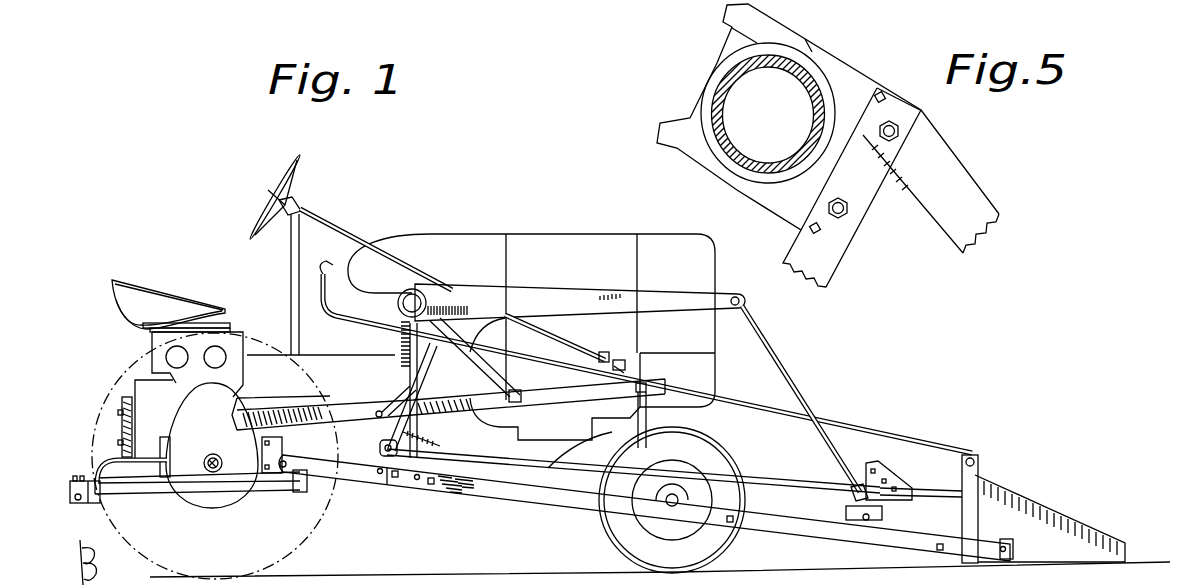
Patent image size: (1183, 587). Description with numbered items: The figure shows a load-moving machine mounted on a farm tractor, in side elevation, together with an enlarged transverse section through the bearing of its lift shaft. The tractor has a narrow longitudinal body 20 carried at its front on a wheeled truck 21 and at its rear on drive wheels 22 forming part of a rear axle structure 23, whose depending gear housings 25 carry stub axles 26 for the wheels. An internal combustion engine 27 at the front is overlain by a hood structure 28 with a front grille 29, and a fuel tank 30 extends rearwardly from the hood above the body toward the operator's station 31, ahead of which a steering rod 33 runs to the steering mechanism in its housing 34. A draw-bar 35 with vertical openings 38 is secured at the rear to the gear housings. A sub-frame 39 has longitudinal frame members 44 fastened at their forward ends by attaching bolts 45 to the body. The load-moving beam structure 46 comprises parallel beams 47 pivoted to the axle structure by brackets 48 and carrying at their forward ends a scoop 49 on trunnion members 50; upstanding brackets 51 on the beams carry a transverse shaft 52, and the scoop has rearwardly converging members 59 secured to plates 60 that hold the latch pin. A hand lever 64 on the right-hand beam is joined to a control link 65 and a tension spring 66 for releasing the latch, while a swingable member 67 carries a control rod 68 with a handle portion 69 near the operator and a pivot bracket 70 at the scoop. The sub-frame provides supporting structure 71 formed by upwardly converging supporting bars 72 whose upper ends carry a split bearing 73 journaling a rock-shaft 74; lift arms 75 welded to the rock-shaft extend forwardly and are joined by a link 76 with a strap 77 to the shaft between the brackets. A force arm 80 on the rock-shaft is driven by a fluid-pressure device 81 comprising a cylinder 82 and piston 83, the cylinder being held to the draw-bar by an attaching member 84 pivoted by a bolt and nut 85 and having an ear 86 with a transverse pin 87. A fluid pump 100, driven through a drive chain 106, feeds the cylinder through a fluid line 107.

In FIG. 1, the longitudinal body 20 is at (325, 363).
In FIG. 1, the wheeled truck 21 is at (713, 446).
In FIG. 1, the drive wheels 22 is at (296, 552).
In FIG. 1, the rear axle structure 23 is at (230, 374).
In FIG. 1, the depending gear housing 25 is at (240, 504).
In FIG. 1, the stub axle 26 is at (213, 474).
In FIG. 1, the internal combustion engine 27 is at (618, 345).
In FIG. 1, the hood structure 28 is at (618, 234).
In FIG. 1, the front grille 29 is at (718, 330).
In FIG. 1, the fuel tank 30 is at (443, 234).
In FIG. 1, the operator's station 31 is at (174, 296).
In FIG. 1, the steering rod 33 is at (556, 332).
In FIG. 1, the housing 34 is at (697, 359).
In FIG. 1, the draw-bar 35 is at (92, 478).
In FIG. 1, the vertical openings 38 is at (291, 164).
In FIG. 1, the sub-frame 39 is at (350, 414).
In FIG. 1, the longitudinally extending frame members 44 is at (466, 439).
In FIG. 1, the attaching bolts 45 is at (647, 410).
In FIG. 1, the beam structure 46 is at (540, 518).
In FIG. 1, the longitudinal beams 47 is at (771, 533).
In FIG. 1, the bracket 48 is at (324, 455).
In FIG. 1, the scoop 49 is at (1076, 503).
In FIG. 1, the trunnion members 50 is at (1012, 548).
In FIG. 1, the upstanding bracket 51 is at (855, 522).
In FIG. 1, the shaft 52 is at (879, 519).
In FIG. 1, the rearwardly converging members 59 is at (940, 489).
In FIG. 1, the plates 60 is at (885, 483).
In FIG. 1, the hand lever 64 is at (471, 375).
In FIG. 1, the control link 65 is at (560, 457).
In FIG. 1, the tension spring 66 is at (445, 444).
In FIG. 1, the longitudinally swingable member 67 is at (408, 361).
In FIG. 1, the control rod 68 is at (360, 325).
In FIG. 1, the handle portion 69 is at (324, 263).
In FIG. 1, the pivot bracket 70 is at (977, 461).
In FIG. 1, the supporting structure 71 is at (474, 312).
In FIG. 5, the supporting structure 71 is at (938, 146).
In FIG. 1, the supporting bars 72 is at (392, 390).
In FIG. 5, the supporting bars 72 is at (975, 208).
In FIG. 5, the split bearing 73 is at (700, 88).
In FIG. 1, the rock-shaft 74 is at (403, 290).
In FIG. 5, the rock-shaft 74 is at (735, 72).
In FIG. 1, the lift arm 75 is at (670, 292).
In FIG. 1, the link 76 is at (785, 378).
In FIG. 1, the strap 77 is at (850, 497).
In FIG. 1, the force arm 80 is at (400, 343).
In FIG. 1, the fluid-pressure device 81 is at (297, 494).
In FIG. 1, the cylinder 82 is at (262, 490).
In FIG. 1, the piston 83 is at (348, 470).
In FIG. 1, the attaching member 84 is at (71, 484).
In FIG. 1, the bolt and nut 85 is at (76, 477).
In FIG. 1, the ear 86 is at (75, 496).
In FIG. 1, the transverse pin 87 is at (81, 500).
In FIG. 1, the fluid pump 100 is at (142, 372).
In FIG. 1, the drive chain 106 is at (122, 421).
In FIG. 1, the fluid line 107 is at (197, 501).